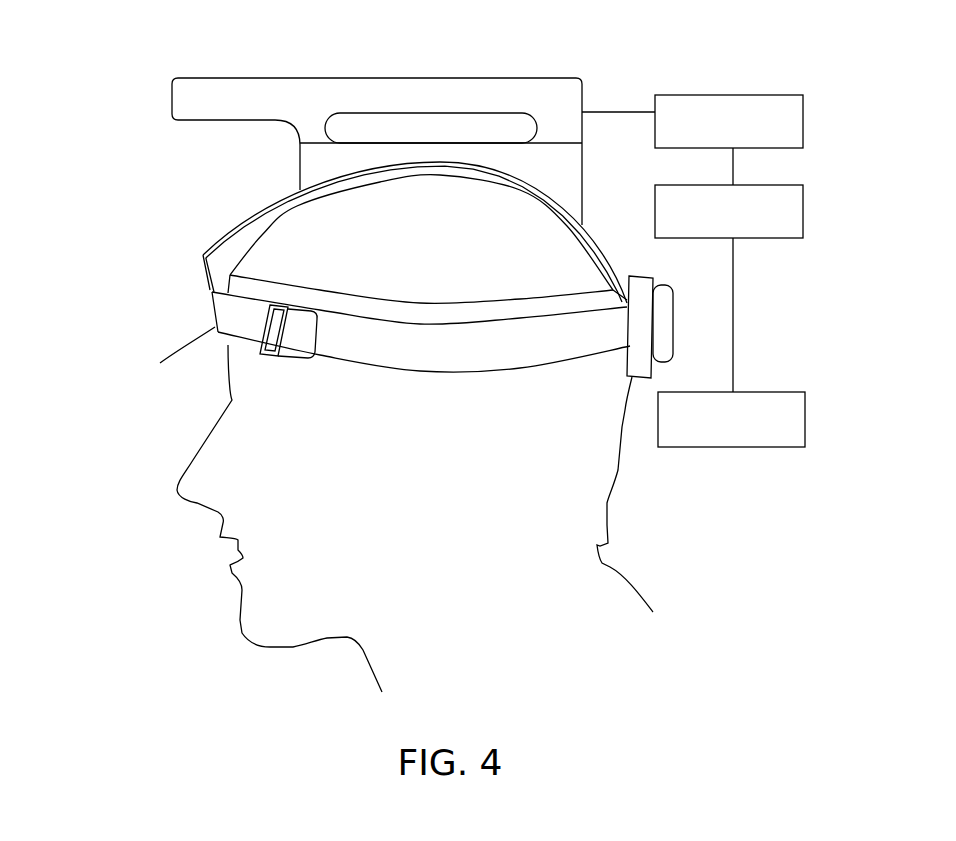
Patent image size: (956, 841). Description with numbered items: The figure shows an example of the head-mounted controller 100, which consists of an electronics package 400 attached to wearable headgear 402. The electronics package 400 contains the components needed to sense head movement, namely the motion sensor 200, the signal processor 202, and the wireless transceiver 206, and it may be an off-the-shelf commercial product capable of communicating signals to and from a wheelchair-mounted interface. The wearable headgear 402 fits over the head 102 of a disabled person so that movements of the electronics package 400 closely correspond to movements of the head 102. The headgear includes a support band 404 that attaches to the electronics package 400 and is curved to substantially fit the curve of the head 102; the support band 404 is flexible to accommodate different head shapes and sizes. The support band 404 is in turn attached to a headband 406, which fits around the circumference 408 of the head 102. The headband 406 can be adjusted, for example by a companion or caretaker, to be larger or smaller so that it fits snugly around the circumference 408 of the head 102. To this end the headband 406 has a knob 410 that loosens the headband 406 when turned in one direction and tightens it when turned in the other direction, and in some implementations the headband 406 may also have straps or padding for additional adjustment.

The head-mounted controller 100 is at (120, 90).
The head 102 is at (406, 509).
The motion sensor 200 is at (770, 449).
The signal processor 202 is at (770, 240).
The wireless transceiver 206 is at (775, 93).
The electronics package 400 is at (513, 77).
The wearable headgear 402 is at (599, 235).
The support band 404 is at (205, 213).
The headband 406 is at (216, 330).
The circumference 408 is at (443, 302).
The knob 410 is at (675, 322).